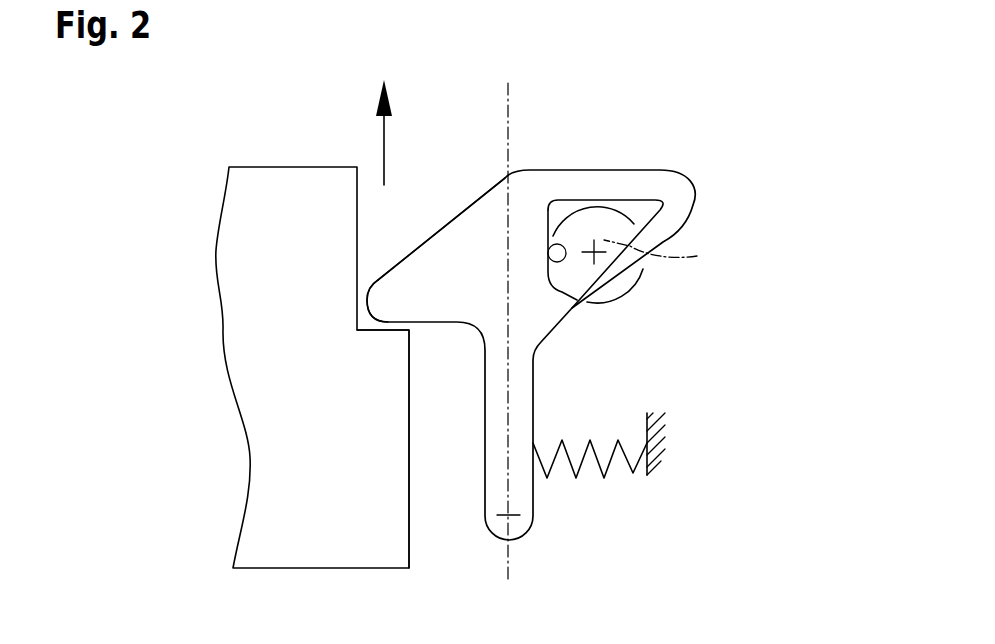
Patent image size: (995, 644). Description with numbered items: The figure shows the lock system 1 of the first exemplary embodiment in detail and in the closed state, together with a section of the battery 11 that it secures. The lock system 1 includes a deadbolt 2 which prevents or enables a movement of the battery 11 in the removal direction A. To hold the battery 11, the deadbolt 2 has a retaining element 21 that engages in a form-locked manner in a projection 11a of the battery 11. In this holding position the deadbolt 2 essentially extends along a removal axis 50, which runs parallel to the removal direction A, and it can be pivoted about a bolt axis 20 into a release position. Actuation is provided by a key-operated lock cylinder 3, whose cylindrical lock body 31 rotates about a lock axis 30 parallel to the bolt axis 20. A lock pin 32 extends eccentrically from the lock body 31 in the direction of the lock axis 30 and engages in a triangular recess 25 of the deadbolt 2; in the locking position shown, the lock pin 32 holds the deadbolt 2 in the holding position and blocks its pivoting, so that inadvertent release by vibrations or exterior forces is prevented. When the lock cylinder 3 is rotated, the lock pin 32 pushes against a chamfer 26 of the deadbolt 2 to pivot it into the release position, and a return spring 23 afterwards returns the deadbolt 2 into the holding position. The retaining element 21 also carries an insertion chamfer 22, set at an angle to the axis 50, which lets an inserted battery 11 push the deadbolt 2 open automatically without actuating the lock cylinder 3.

The lock system 1 is at (712, 96).
The deadbolt 2 is at (528, 408).
The lock cylinder 3 is at (648, 236).
The battery 11 is at (240, 273).
The projection 11a is at (397, 343).
The bolt axis 20 is at (520, 515).
The retaining element 21 is at (405, 305).
The insertion chamfer 22 is at (445, 222).
The return spring 23 is at (635, 476).
The triangular recess 25 is at (560, 198).
The chamfer 26 is at (574, 270).
The lock axis 30 is at (667, 249).
The lock body 31 is at (600, 301).
The lock pin 32 is at (592, 248).
The removal axis 50 is at (505, 113).
The removal direction A is at (382, 150).